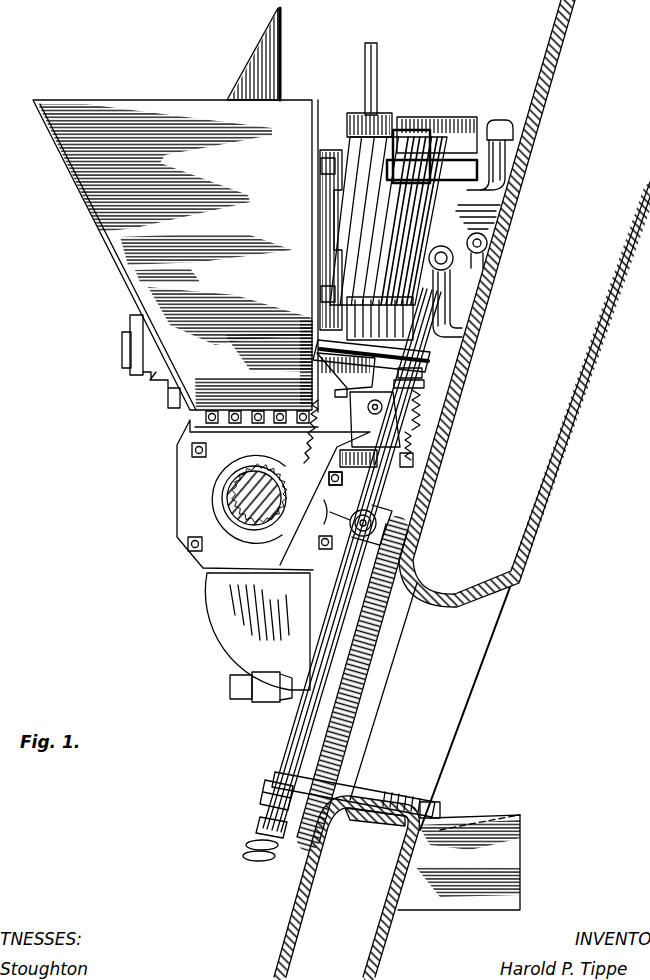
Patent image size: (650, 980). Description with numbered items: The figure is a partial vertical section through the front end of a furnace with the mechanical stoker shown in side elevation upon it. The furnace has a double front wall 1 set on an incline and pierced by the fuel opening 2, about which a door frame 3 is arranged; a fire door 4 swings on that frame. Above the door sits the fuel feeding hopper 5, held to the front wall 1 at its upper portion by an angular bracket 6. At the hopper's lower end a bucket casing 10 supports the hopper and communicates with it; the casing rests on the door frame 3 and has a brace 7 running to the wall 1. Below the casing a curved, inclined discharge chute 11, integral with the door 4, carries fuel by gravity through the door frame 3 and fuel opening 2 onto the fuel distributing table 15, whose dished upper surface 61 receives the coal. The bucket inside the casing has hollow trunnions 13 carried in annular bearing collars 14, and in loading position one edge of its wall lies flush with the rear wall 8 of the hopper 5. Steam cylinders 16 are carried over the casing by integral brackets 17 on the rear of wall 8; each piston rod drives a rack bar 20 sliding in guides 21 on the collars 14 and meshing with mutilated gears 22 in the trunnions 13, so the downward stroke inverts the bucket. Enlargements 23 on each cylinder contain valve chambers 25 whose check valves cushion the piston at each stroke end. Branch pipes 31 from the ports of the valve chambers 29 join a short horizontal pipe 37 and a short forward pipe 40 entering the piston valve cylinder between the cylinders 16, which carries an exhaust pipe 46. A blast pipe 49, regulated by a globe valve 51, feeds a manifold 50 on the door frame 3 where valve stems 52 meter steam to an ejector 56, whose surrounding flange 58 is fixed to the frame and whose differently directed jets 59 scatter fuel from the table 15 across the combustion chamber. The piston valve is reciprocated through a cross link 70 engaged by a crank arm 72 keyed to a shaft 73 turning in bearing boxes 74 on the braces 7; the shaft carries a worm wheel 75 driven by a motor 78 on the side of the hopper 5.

The double front wall 1 is at (465, 522).
The fuel opening 2 is at (392, 780).
The door frame 3 is at (355, 636).
The fire door 4 is at (290, 662).
The fuel feeding hopper 5 is at (175, 255).
The angular bracket 6 is at (500, 212).
The brace 7 is at (374, 443).
The rear wall of hopper 8 is at (308, 129).
The bucket casing 10 is at (178, 455).
The discharge chute 11 is at (218, 598).
The hollow trunnions 13 is at (220, 480).
The annular bearing collars 14 is at (256, 435).
The fuel distributing table 15 is at (505, 852).
The steam cylinders 16 is at (388, 221).
The integral brackets 17 is at (320, 162).
The rack bar 20 is at (294, 431).
The guides 21 is at (321, 485).
The mutilated gears 22 is at (225, 505).
The enlargements 23 is at (320, 221).
The valve chambers 25 is at (340, 118).
The valve chambers 29 is at (422, 126).
The branch pipes 31 is at (505, 180).
The short horizontal pipe 37 is at (487, 240).
The short pipe 40 is at (490, 127).
The exhaust pipe 46 is at (378, 74).
The blast pipe 49 is at (425, 374).
The manifold 50 is at (258, 808).
The globe valve 51 is at (378, 520).
The valve stems 52 is at (244, 845).
The ejector 56 is at (353, 786).
The surrounding flange 58 is at (360, 775).
The jets 59 is at (437, 802).
The dished upper surface 61 is at (480, 815).
The cross link 70 is at (420, 388).
The crank arm 72 is at (383, 410).
The shaft 73 is at (420, 426).
The bearing boxes 74 is at (415, 466).
The worm wheel 75 is at (412, 446).
The motor 78 is at (150, 380).